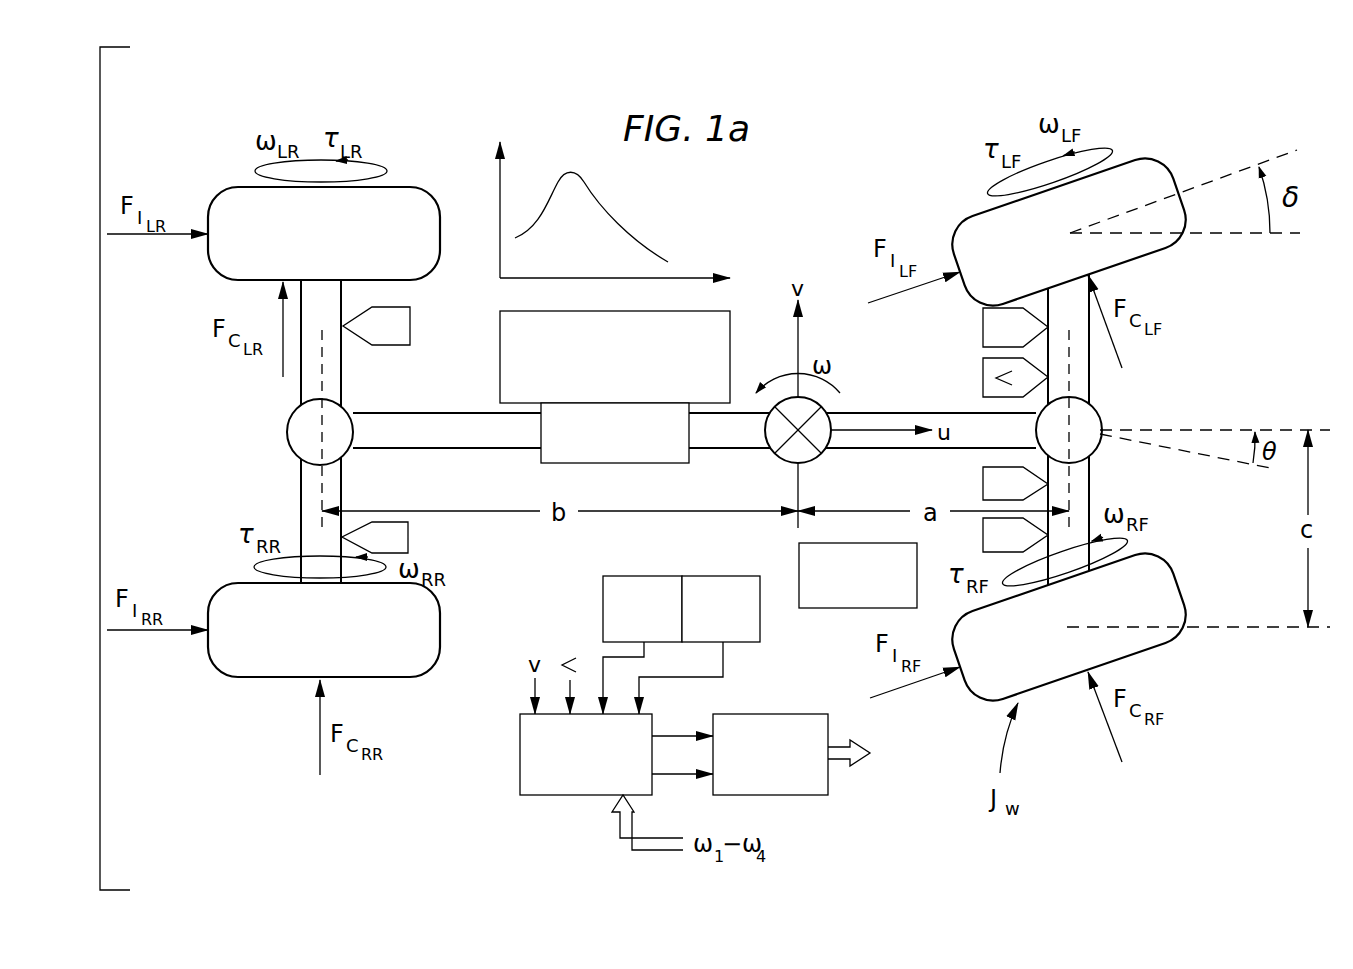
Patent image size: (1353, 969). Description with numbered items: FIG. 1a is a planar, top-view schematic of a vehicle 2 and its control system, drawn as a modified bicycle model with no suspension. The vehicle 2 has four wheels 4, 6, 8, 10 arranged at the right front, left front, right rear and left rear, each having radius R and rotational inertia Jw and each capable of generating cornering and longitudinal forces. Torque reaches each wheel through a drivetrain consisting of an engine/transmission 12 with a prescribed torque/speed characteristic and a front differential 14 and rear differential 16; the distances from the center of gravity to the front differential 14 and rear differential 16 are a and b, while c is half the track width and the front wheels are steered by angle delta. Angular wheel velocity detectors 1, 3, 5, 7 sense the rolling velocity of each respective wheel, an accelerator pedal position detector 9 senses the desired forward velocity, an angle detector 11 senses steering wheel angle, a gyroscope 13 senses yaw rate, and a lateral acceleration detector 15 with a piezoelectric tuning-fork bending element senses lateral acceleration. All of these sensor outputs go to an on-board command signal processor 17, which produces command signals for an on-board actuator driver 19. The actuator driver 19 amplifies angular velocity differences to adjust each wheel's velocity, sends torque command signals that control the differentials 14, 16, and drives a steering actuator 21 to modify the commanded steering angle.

The angular wheel velocity detector 1 is at (983, 537).
The vehicle 2 is at (738, 243).
The angular wheel velocity detector 3 is at (983, 328).
The wheel 4 is at (1173, 640).
The angular wheel velocity detector 5 is at (408, 538).
The wheel 6 is at (1173, 242).
The angular wheel velocity detector 7 is at (410, 326).
The wheel 8 is at (440, 632).
The accelerator pedal position detector 9 is at (983, 486).
The wheel 10 is at (440, 234).
The angle detector 11 is at (983, 378).
The engine/transmission 12 is at (500, 359).
The gyroscope 13 is at (760, 628).
The front differential 14 is at (1097, 410).
The lateral acceleration detector 15 is at (603, 628).
The rear differential 16 is at (340, 407).
The command signal processor 17 is at (520, 756).
The actuator driver 19 is at (828, 795).
The steering actuator 21 is at (857, 608).